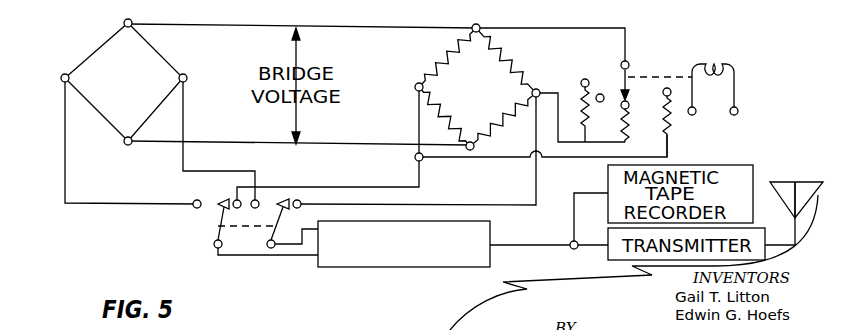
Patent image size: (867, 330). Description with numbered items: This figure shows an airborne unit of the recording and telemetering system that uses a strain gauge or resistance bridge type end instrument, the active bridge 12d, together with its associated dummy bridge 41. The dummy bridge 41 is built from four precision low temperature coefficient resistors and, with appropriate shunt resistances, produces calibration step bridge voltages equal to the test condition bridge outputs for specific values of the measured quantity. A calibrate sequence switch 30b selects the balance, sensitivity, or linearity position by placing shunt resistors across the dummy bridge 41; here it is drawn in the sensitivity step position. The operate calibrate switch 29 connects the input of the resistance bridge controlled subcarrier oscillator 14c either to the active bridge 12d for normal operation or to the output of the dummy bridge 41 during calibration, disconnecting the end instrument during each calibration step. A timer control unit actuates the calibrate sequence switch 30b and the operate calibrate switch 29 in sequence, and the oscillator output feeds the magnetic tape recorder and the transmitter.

The active bridge 12d is at (108, 38).
The dummy bridge 41 is at (493, 45).
The calibrate sequence switch 30b is at (627, 76).
The operate calibrate switch 29 is at (222, 222).
The resistance bridge controlled subcarrier oscillator 14c is at (410, 268).